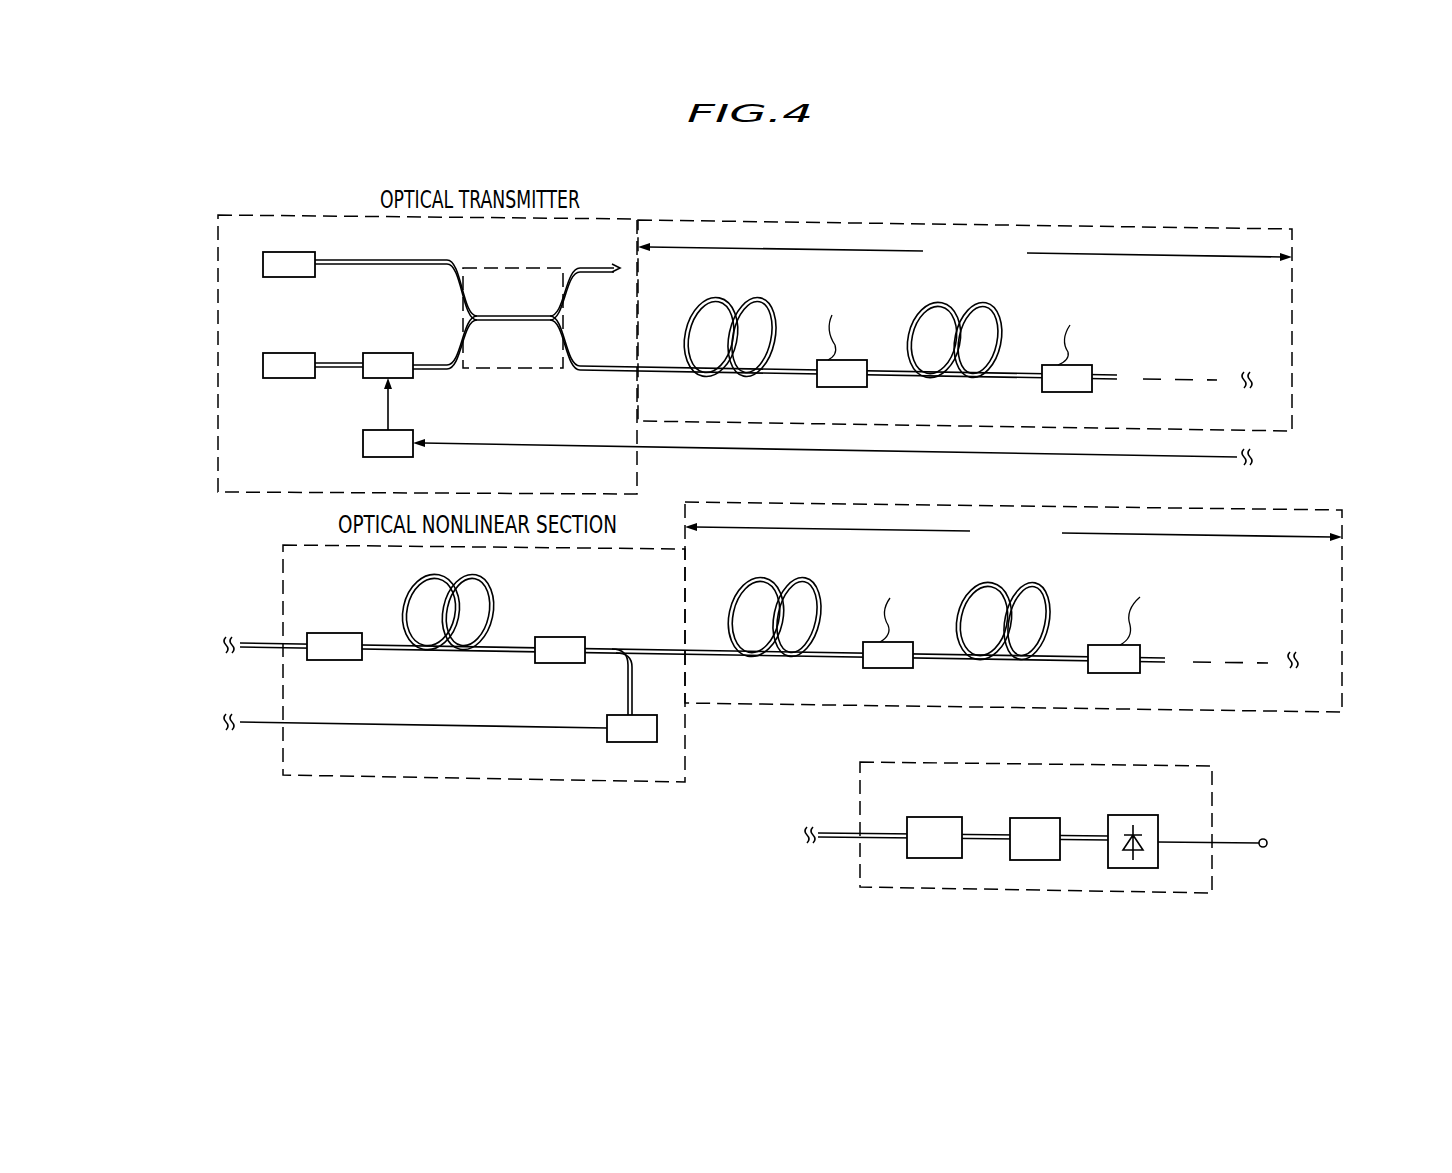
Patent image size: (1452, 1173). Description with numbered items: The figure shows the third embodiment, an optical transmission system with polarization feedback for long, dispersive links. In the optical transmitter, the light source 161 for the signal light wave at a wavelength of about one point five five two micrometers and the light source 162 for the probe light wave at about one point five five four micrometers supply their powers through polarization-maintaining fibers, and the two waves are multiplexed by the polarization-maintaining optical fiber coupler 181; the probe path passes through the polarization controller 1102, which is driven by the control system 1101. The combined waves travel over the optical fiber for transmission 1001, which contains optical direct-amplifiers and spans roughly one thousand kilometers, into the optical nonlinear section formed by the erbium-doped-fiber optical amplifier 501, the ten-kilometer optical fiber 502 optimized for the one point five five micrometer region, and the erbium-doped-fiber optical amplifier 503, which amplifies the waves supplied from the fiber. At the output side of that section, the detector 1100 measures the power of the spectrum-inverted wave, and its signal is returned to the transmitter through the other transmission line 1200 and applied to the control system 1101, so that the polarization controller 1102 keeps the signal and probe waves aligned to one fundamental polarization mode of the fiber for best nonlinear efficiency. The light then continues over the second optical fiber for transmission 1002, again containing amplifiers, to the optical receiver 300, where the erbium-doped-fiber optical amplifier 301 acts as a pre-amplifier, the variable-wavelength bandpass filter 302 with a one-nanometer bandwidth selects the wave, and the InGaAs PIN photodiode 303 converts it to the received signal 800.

The light source for the signal light wave 161 is at (270, 252).
The light source for the probe light wave 162 is at (290, 378).
The polarization controller 1102 is at (403, 379).
The control system 1101 is at (403, 458).
The polarization-maintaining optical fiber coupler 181 is at (487, 268).
The optical fiber for transmission 1001 is at (1113, 225).
The transmission line 1200 is at (942, 453).
The erbium-doped-fiber optical amplifier 501 is at (320, 633).
The optical fiber 502 is at (497, 595).
The erbium-doped-fiber optical amplifier 503 is at (550, 636).
The detector 1100 is at (623, 743).
The optical fiber for transmission 1002 is at (930, 707).
The optical receiver 300 is at (1057, 762).
The erbium-doped-fiber optical amplifier 301 is at (915, 817).
The variable-wavelength bandpass filter 302 is at (1030, 860).
The PIN photodiode 303 is at (1160, 823).
The received signal 800 is at (1261, 870).